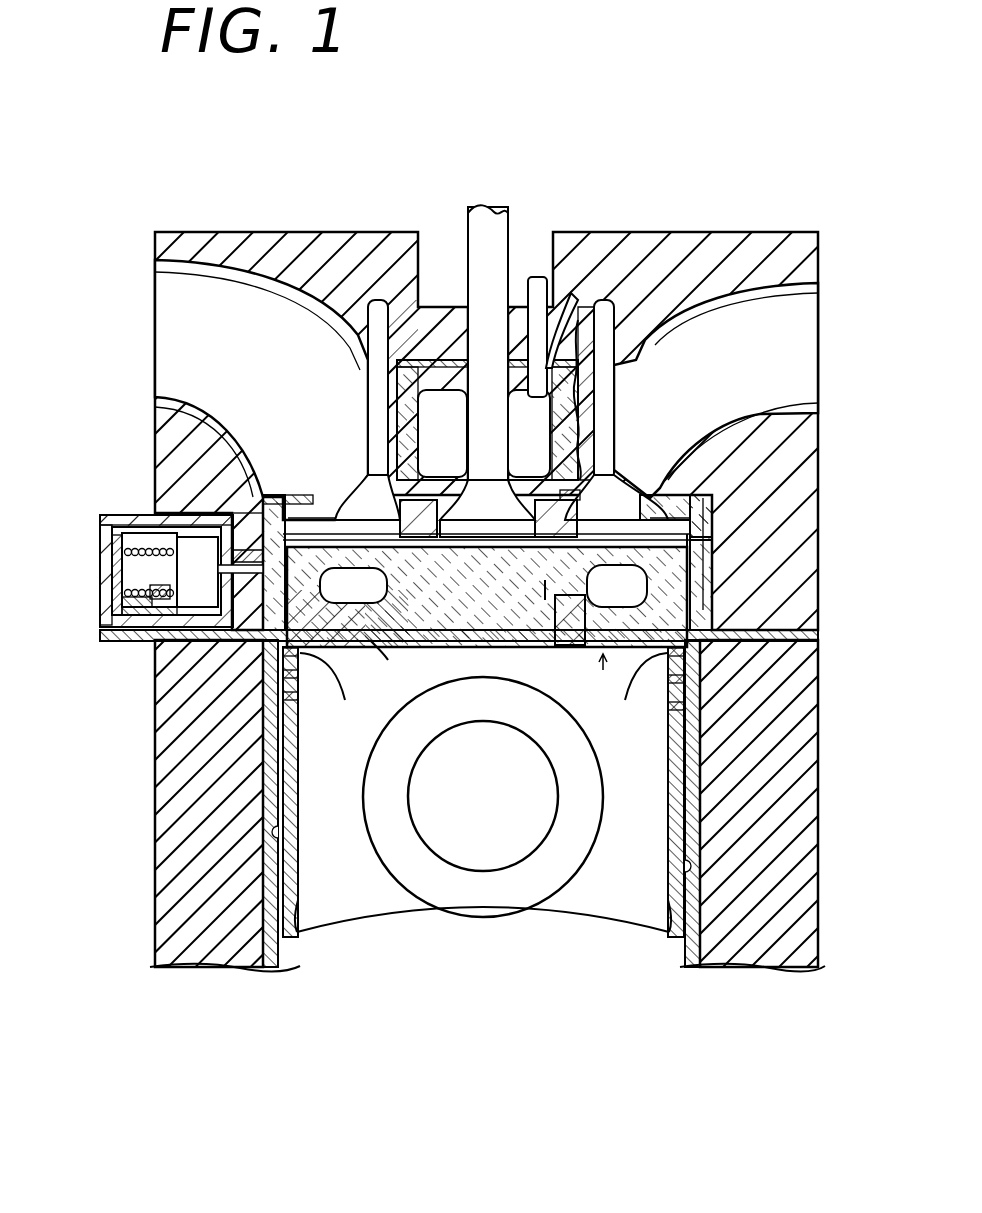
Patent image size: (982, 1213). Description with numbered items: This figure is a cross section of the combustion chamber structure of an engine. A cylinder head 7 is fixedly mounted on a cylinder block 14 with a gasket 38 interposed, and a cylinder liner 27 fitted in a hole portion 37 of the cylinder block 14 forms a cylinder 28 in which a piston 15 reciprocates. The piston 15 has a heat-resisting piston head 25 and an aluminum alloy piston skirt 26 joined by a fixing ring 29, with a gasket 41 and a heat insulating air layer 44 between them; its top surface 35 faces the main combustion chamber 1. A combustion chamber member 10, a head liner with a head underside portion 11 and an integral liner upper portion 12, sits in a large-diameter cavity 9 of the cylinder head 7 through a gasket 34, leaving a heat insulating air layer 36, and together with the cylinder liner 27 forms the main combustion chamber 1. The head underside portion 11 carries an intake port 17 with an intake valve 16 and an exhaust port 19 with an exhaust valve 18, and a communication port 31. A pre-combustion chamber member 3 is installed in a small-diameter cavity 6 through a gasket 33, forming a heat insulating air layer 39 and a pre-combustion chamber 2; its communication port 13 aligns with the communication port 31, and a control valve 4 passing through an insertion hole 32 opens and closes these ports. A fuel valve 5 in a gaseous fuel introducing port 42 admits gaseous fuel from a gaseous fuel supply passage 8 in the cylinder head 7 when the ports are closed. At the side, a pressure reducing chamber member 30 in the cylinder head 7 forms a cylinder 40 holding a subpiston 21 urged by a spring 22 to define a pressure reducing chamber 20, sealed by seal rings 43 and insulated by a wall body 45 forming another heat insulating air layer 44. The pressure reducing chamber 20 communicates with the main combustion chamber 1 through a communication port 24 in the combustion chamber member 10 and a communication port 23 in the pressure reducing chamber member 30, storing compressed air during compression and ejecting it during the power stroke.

The main combustion chamber 1 is at (410, 630).
The pre-combustion chamber 2 is at (514, 460).
The pre-combustion chamber member 3 is at (420, 345).
The control valve 4 is at (475, 511).
The fuel valve 5 is at (509, 360).
The small-diameter cavity 6 is at (586, 397).
The cylinder head 7 is at (768, 486).
The gaseous fuel supply passage 8 is at (556, 345).
The large-diameter cavity 9 is at (700, 537).
The combustion chamber member 10 is at (222, 560).
The head underside portion 11 is at (572, 497).
The liner upper portion 12 is at (698, 595).
The communication port 13 is at (516, 500).
The cylinder block 14 is at (200, 728).
The piston 15 is at (603, 670).
The intake valve 16 is at (612, 442).
The intake port 17 is at (770, 353).
The exhaust valve 18 is at (278, 495).
The exhaust port 19 is at (228, 332).
The pressure reducing chamber 20 is at (160, 515).
The subpiston 21 is at (147, 610).
The spring 22 is at (105, 524).
The communication port 23 is at (303, 710).
The communication port 24 is at (242, 550).
The piston head 25 is at (382, 648).
The piston skirt 26 is at (672, 827).
The cylinder liner 27 is at (272, 772).
The cylinder 28 is at (295, 855).
The fixing ring 29 is at (558, 640).
The pressure reducing chamber member 30 is at (122, 576).
The communication port 31 is at (428, 540).
The insertion hole 32 is at (468, 385).
The gasket 33 is at (452, 360).
The gasket 34 is at (690, 467).
The top surface 35 is at (365, 604).
The heat insulating air layer 36 is at (172, 513).
The hole portion 37 is at (276, 832).
The gasket 38 is at (812, 636).
The heat insulating air layer 39 is at (398, 397).
The cylinder 40 is at (120, 600).
The gasket 41 is at (547, 585).
The gaseous fuel introducing port 42 is at (575, 300).
The seal rings 43 is at (158, 600).
The heat insulating air layer 44 is at (615, 600).
The wall body 45 is at (103, 548).